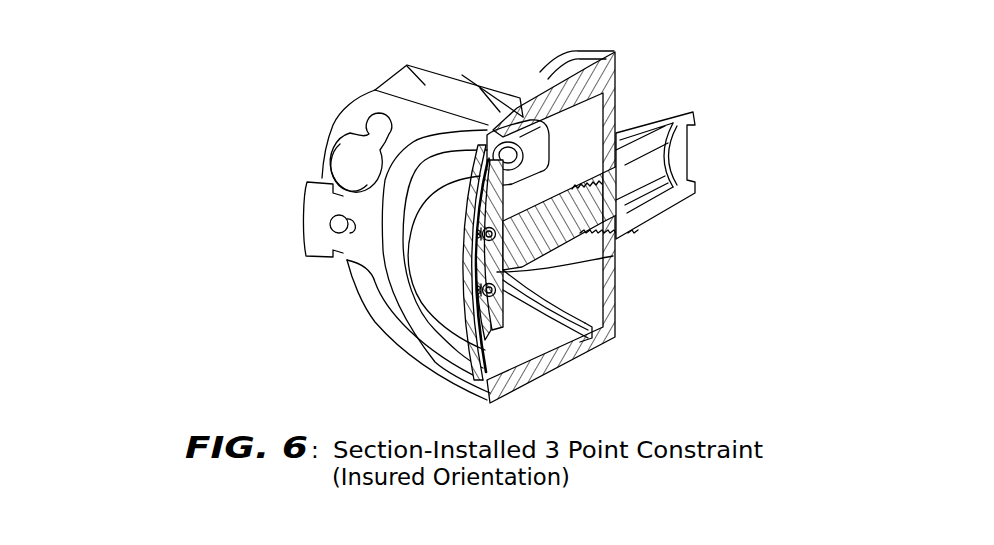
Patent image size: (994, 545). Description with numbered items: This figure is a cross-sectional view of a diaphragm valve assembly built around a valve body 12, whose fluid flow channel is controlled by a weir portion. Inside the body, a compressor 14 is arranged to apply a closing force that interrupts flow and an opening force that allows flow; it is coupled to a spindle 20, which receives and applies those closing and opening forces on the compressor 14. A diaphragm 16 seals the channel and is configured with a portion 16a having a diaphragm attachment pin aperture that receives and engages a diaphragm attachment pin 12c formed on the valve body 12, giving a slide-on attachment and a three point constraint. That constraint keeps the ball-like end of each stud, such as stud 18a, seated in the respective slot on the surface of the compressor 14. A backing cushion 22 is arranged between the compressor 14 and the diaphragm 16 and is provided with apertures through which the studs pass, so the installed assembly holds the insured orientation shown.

The valve body 12 is at (410, 66).
The diaphragm attachment pin 12c is at (333, 222).
The compressor 14 is at (595, 347).
The diaphragm 16 is at (333, 243).
The portion of the diaphragm 16a is at (313, 199).
The stud 18a is at (613, 257).
The spindle 20 is at (677, 157).
The backing cushion 22 is at (497, 343).